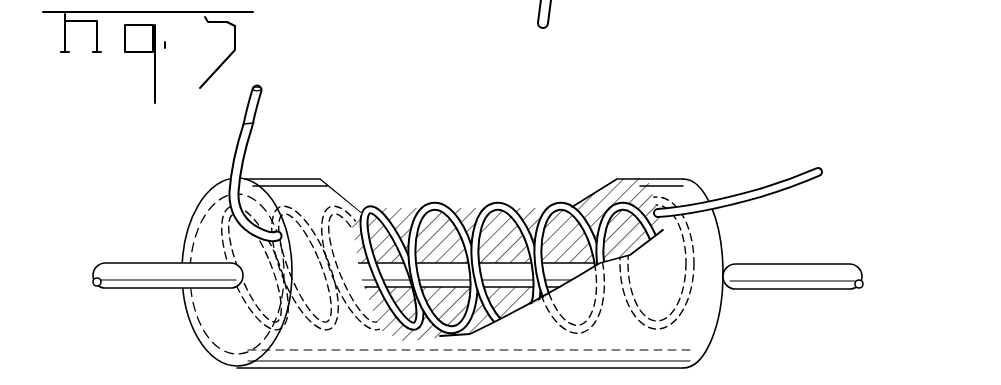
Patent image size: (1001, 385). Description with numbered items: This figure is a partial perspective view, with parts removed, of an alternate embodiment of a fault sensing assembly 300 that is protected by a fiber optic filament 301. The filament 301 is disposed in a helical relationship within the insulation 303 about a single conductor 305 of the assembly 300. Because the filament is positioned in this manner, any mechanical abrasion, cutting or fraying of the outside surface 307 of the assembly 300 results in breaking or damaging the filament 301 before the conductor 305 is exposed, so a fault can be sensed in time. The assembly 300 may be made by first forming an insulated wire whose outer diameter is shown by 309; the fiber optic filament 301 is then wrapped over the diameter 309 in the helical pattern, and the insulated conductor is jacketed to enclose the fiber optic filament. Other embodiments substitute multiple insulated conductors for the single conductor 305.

The fault sensing assembly 300 is at (303, 164).
The fiber optic filament 301 is at (483, 202).
The insulation 303 is at (607, 180).
The single conductor 305 is at (148, 273).
The outside surface 307 is at (658, 183).
The outer diameter 309 is at (198, 218).